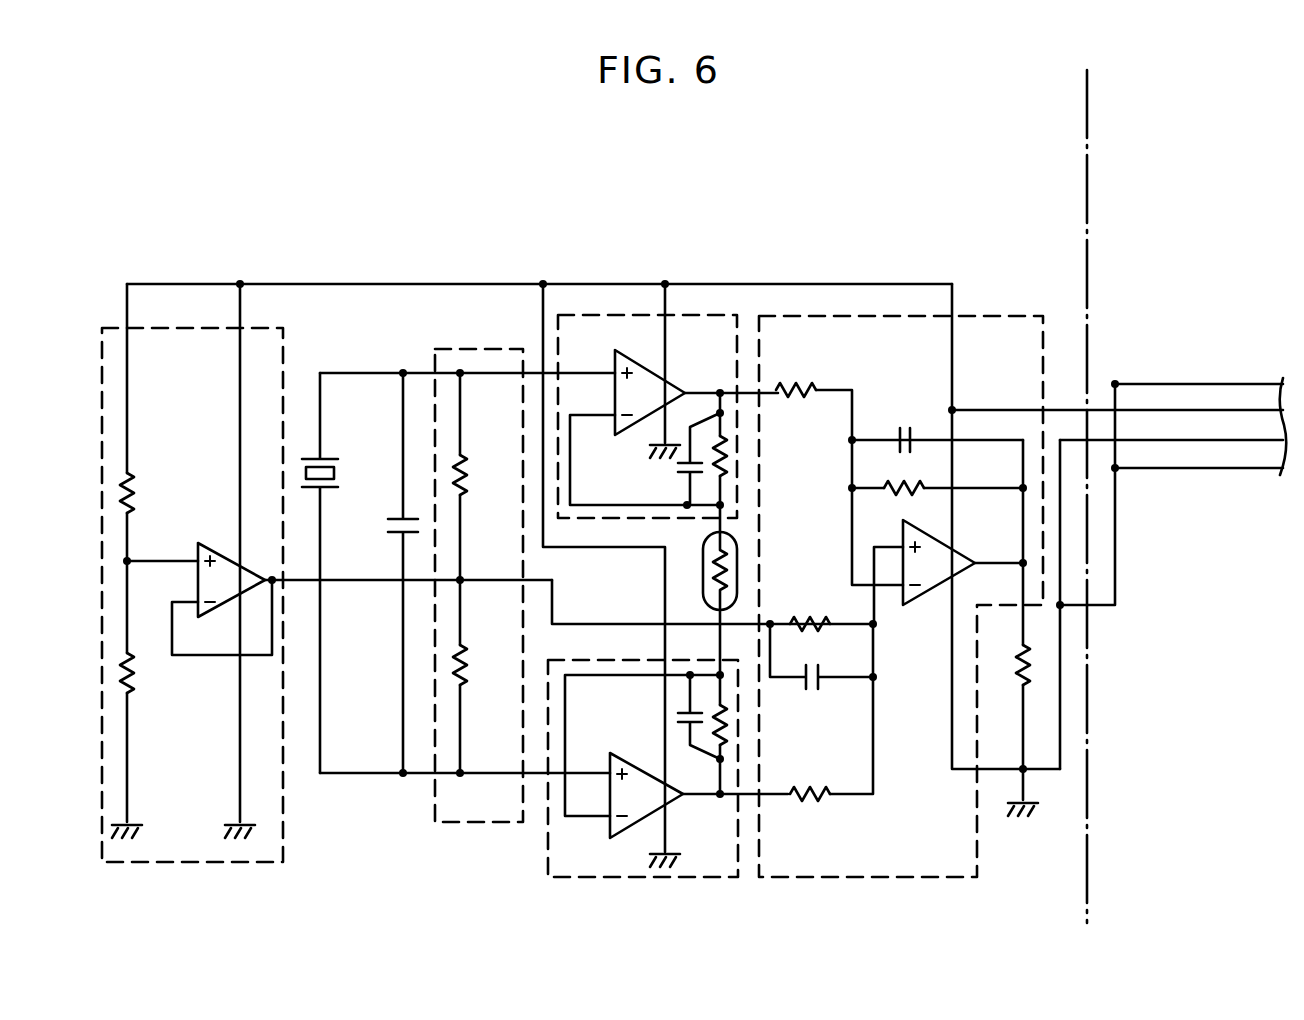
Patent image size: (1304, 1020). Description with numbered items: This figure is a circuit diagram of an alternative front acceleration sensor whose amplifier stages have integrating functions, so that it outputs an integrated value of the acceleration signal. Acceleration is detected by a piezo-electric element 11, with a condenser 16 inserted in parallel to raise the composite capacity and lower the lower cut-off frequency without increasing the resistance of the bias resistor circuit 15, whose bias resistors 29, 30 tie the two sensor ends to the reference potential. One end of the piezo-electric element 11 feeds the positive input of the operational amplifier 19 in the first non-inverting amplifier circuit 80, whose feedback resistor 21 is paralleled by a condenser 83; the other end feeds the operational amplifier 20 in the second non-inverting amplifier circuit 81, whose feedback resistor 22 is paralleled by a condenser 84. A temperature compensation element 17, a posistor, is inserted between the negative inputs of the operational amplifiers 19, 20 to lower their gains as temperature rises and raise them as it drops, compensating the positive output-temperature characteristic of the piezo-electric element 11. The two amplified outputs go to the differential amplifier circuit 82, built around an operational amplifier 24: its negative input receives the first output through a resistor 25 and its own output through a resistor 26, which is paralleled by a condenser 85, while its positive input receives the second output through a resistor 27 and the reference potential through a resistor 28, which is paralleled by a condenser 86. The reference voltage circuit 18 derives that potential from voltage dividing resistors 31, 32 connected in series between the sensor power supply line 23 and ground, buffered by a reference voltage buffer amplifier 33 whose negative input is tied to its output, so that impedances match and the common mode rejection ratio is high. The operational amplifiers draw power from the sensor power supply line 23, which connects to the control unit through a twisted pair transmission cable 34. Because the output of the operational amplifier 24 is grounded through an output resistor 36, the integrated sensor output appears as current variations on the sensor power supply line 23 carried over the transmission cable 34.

The piezo-electric element 11 is at (333, 470).
The bias resistor circuit 15 is at (452, 349).
The condenser 16 is at (385, 530).
The temperature compensation element 17 is at (705, 583).
The reference voltage circuit 18 is at (152, 327).
The operational amplifier 19 is at (628, 437).
The operational amplifier 20 is at (673, 810).
The resistor 21 is at (736, 462).
The resistor 22 is at (735, 737).
The sensor power supply line 23 is at (556, 283).
The operational amplifier 24 is at (918, 605).
The resistor 25 is at (800, 390).
The resistor 26 is at (890, 478).
The resistor 27 is at (818, 802).
The resistor 28 is at (813, 612).
The bias resistor 29 is at (467, 482).
The bias resistor 30 is at (468, 688).
The voltage dividing resistor 31 is at (135, 495).
The voltage dividing resistor 32 is at (138, 672).
The reference voltage buffer amplifier 33 is at (212, 543).
The transmission cable 34 is at (1203, 382).
The output resistor 36 is at (1012, 665).
The first non-inverting amplifier circuit 80 is at (707, 315).
The second non-inverting amplifier circuit 81 is at (612, 880).
The differential amplifier circuit 82 is at (1012, 316).
The condenser 83 is at (676, 470).
The condenser 84 is at (675, 716).
The condenser 85 is at (903, 428).
The condenser 86 is at (812, 690).